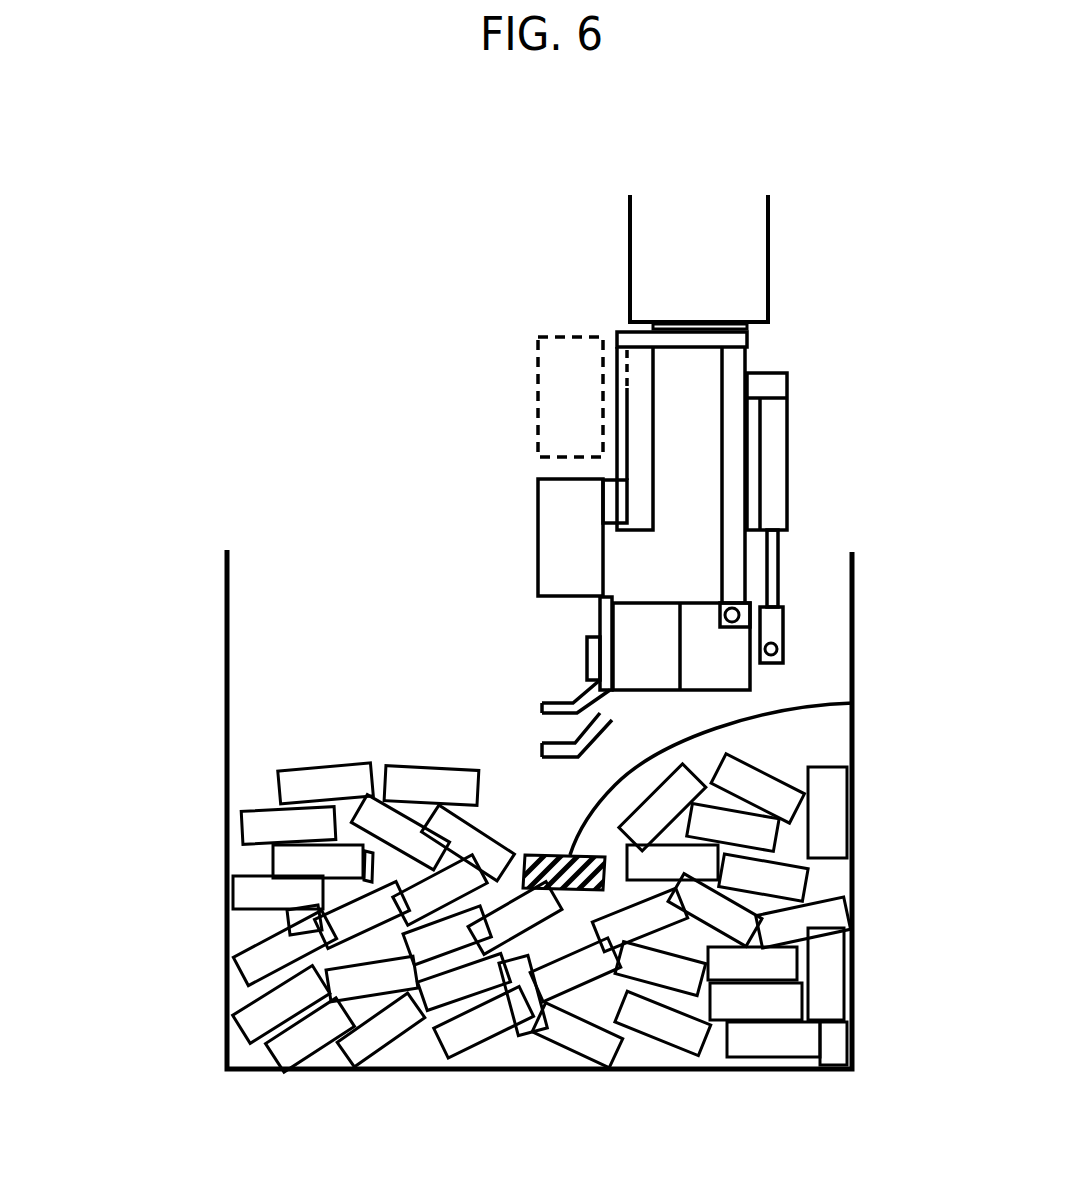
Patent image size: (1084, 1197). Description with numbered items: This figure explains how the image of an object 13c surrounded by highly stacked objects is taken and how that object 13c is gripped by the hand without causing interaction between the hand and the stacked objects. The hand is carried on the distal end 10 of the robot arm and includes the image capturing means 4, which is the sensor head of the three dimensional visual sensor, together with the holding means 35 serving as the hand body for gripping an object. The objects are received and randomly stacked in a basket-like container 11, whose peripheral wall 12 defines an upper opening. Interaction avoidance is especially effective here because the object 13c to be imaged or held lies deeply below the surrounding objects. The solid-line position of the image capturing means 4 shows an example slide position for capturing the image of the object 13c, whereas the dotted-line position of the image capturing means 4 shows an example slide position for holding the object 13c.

The distal end of the robot arm 10 is at (630, 247).
The image capturing means 4 is at (538, 388).
The holding means 35 is at (513, 695).
The peripheral wall 12 is at (230, 603).
The container 11 is at (184, 849).
The object 13c is at (853, 703).